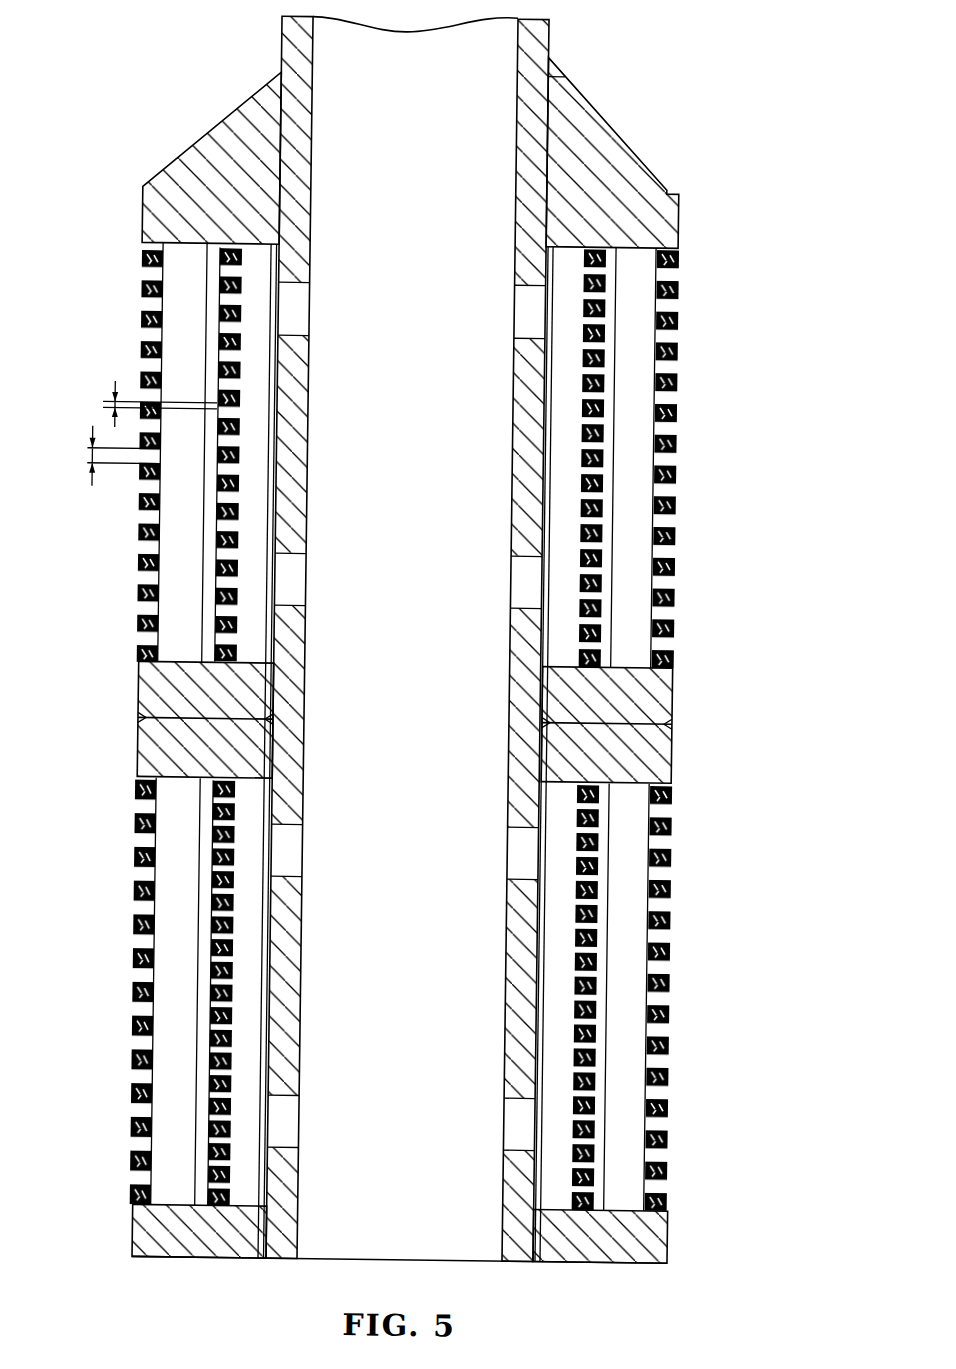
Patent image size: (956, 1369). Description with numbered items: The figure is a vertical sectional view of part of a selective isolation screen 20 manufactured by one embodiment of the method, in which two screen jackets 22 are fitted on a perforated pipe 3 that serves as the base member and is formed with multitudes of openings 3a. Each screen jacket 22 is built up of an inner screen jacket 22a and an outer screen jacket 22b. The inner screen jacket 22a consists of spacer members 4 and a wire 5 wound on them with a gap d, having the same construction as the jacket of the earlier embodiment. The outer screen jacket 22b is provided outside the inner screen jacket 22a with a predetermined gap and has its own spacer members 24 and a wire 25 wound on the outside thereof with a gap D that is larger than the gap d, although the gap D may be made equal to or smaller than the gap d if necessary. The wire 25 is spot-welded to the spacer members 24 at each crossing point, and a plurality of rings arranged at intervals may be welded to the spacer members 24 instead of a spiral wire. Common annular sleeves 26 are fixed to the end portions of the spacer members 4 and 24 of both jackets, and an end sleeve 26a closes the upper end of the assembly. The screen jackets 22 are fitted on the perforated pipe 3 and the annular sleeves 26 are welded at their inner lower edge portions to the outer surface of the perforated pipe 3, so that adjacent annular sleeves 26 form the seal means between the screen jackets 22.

The screen 20 is at (695, 64).
The perforated pipe 3 is at (283, 100).
The openings 3a is at (303, 313).
The spacer members 4 is at (253, 299).
The wire 5 is at (216, 330).
The screen jacket 22 is at (691, 474).
The inner screen jacket 22a is at (563, 245).
The outer screen jacket 22b is at (628, 245).
The spacer members 24 is at (186, 519).
The wire 25 is at (142, 599).
The annular sleeves 26 is at (148, 745).
The end sleeve 26a is at (189, 196).
The gap d is at (151, 405).
The gap D is at (109, 455).